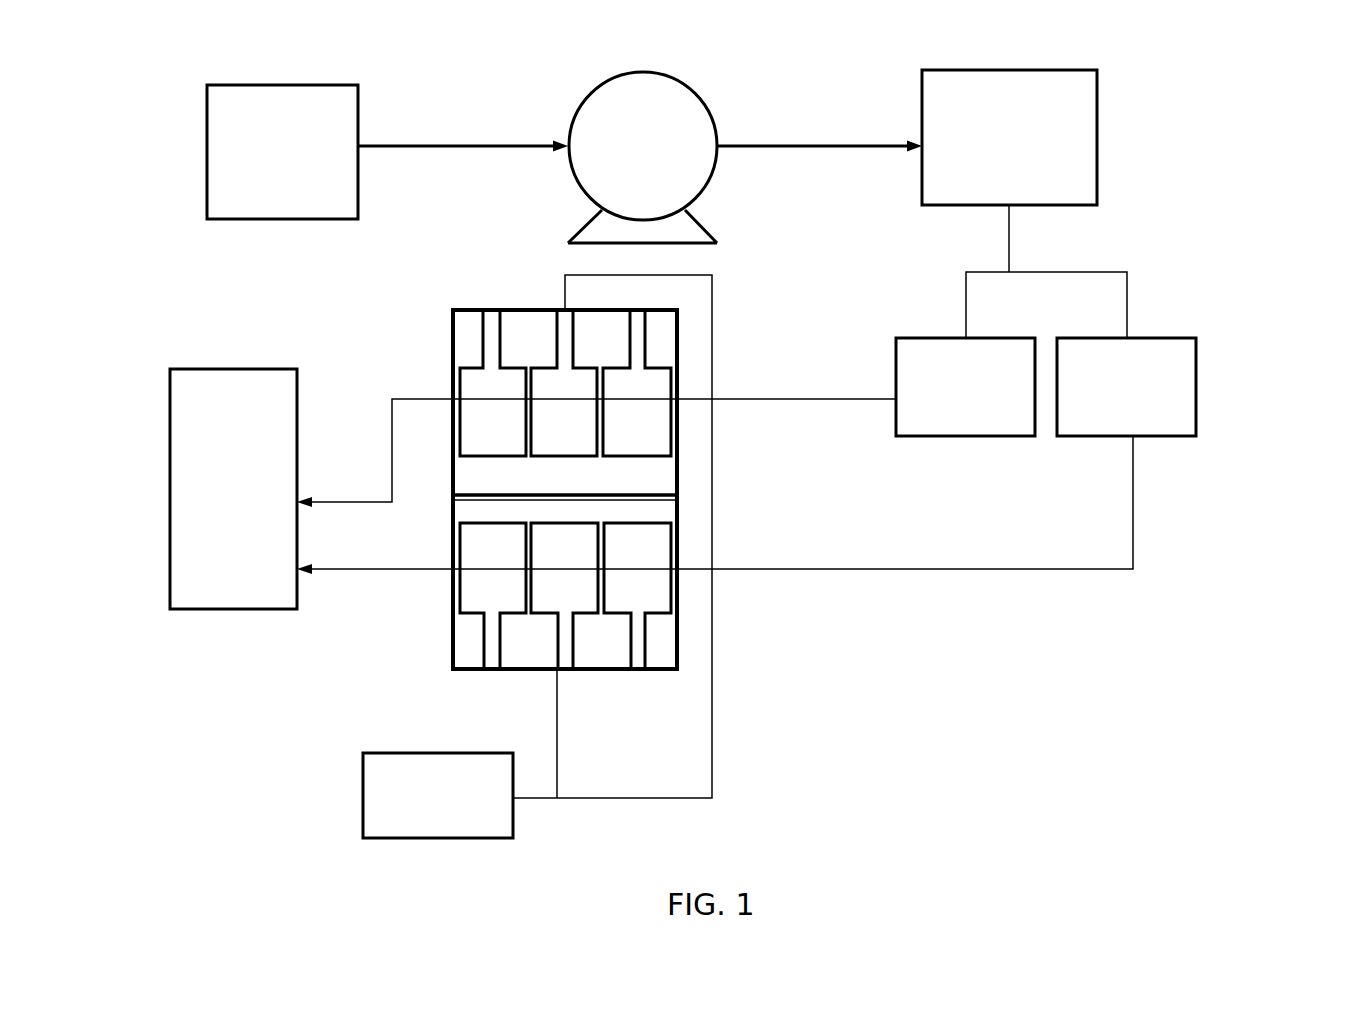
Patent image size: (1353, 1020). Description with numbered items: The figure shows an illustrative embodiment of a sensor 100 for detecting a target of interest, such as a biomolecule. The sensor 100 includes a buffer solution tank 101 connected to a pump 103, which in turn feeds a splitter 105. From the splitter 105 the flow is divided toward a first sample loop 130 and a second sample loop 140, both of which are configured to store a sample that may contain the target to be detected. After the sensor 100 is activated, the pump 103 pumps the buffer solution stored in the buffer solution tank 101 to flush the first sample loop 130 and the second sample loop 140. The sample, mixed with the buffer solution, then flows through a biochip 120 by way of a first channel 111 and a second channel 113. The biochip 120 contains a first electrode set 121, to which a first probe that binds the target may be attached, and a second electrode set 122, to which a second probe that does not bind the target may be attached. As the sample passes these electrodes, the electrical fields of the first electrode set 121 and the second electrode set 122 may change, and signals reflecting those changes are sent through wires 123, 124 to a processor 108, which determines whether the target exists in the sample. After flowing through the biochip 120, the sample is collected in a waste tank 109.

The sensor 100 is at (1176, 266).
The buffer solution tank 101 is at (203, 157).
The pump 103 is at (680, 157).
The splitter 105 is at (1097, 108).
The processor 108 is at (362, 782).
The waste tank 109 is at (197, 548).
The first channel 111 is at (817, 390).
The second channel 113 is at (792, 585).
The biochip 120 is at (509, 523).
The first electrode set 121 is at (475, 387).
The second electrode set 122 is at (475, 595).
The wire 123 is at (637, 536).
The wire 124 is at (579, 733).
The first sample loop 130 is at (965, 387).
The second sample loop 140 is at (1126, 387).